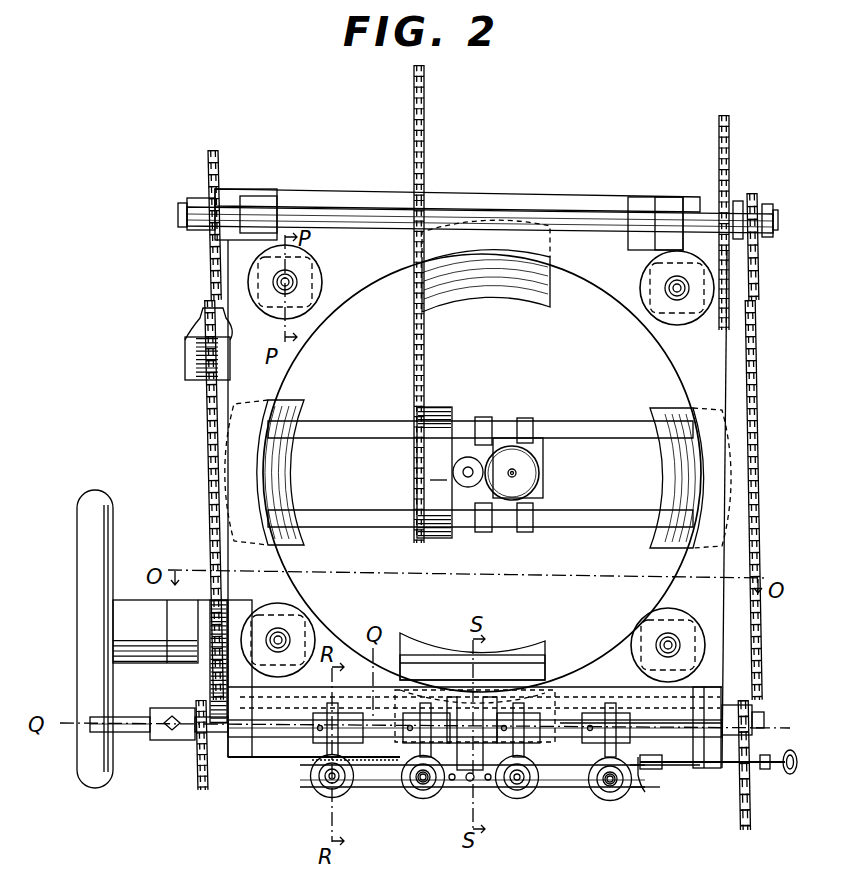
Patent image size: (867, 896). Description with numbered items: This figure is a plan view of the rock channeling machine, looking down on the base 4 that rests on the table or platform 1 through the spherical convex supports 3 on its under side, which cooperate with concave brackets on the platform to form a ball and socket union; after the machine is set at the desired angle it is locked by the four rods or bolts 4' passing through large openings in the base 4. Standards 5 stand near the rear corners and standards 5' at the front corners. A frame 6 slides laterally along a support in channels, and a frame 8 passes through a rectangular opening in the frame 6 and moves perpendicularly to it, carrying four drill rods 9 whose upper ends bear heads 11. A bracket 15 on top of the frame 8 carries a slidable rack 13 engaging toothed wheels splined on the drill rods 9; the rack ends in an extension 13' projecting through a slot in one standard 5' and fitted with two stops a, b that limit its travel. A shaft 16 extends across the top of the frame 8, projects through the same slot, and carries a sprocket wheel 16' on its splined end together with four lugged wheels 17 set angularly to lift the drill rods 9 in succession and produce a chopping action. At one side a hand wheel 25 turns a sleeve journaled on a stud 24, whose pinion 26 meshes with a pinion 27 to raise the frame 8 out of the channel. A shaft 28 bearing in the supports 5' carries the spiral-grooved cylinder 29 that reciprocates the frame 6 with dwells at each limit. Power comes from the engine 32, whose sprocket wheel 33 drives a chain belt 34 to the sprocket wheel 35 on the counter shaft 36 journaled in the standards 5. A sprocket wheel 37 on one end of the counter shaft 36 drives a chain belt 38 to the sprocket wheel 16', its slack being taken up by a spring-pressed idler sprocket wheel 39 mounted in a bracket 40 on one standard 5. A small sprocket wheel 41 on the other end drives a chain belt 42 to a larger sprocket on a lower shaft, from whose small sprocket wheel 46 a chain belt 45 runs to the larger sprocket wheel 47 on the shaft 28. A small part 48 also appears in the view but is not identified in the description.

The table or platform 1 is at (348, 203).
The spherical convex supports or brackets 3 is at (488, 300).
The base 4 is at (482, 473).
The rods or bolts 4' is at (526, 453).
The standards or supports 5 is at (435, 200).
The standards or supports 5' is at (435, 747).
The frame 6 is at (375, 790).
The frame 8 is at (568, 790).
The drill rods 9 is at (318, 788).
The heads 11 is at (420, 784).
The slidable rack 13 is at (712, 751).
The extension 13' is at (725, 767).
The bracket 15 is at (604, 690).
The shaft 16 is at (159, 746).
The sprocket wheel 16' is at (174, 748).
The wheels 17 is at (326, 748).
The stud 24 is at (155, 631).
The hand wheel 25 is at (77, 632).
The pinion 26 is at (208, 598).
The pinion 27 is at (210, 684).
The shaft 28 is at (764, 732).
The cylinder 29 is at (500, 668).
The source of power 32 is at (528, 472).
The sprocket wheel 33 is at (416, 494).
The chain belt 34 is at (424, 352).
The sprocket wheel 35 is at (422, 205).
The counter shaft 36 is at (562, 210).
The sprocket wheel 37 is at (207, 170).
The chain belt 38 is at (205, 450).
The spring-pressed idler sprocket wheel 39 is at (196, 353).
The bracket 40 is at (196, 376).
The small sprocket wheel 41 is at (729, 200).
The chain belt 42 is at (730, 128).
The chain belt 45 is at (753, 390).
The small sprocket wheel 46 is at (758, 218).
The larger sprocket wheel 47 is at (748, 708).
The small plate 48 is at (468, 782).
The stop a is at (765, 770).
The stop b is at (662, 780).